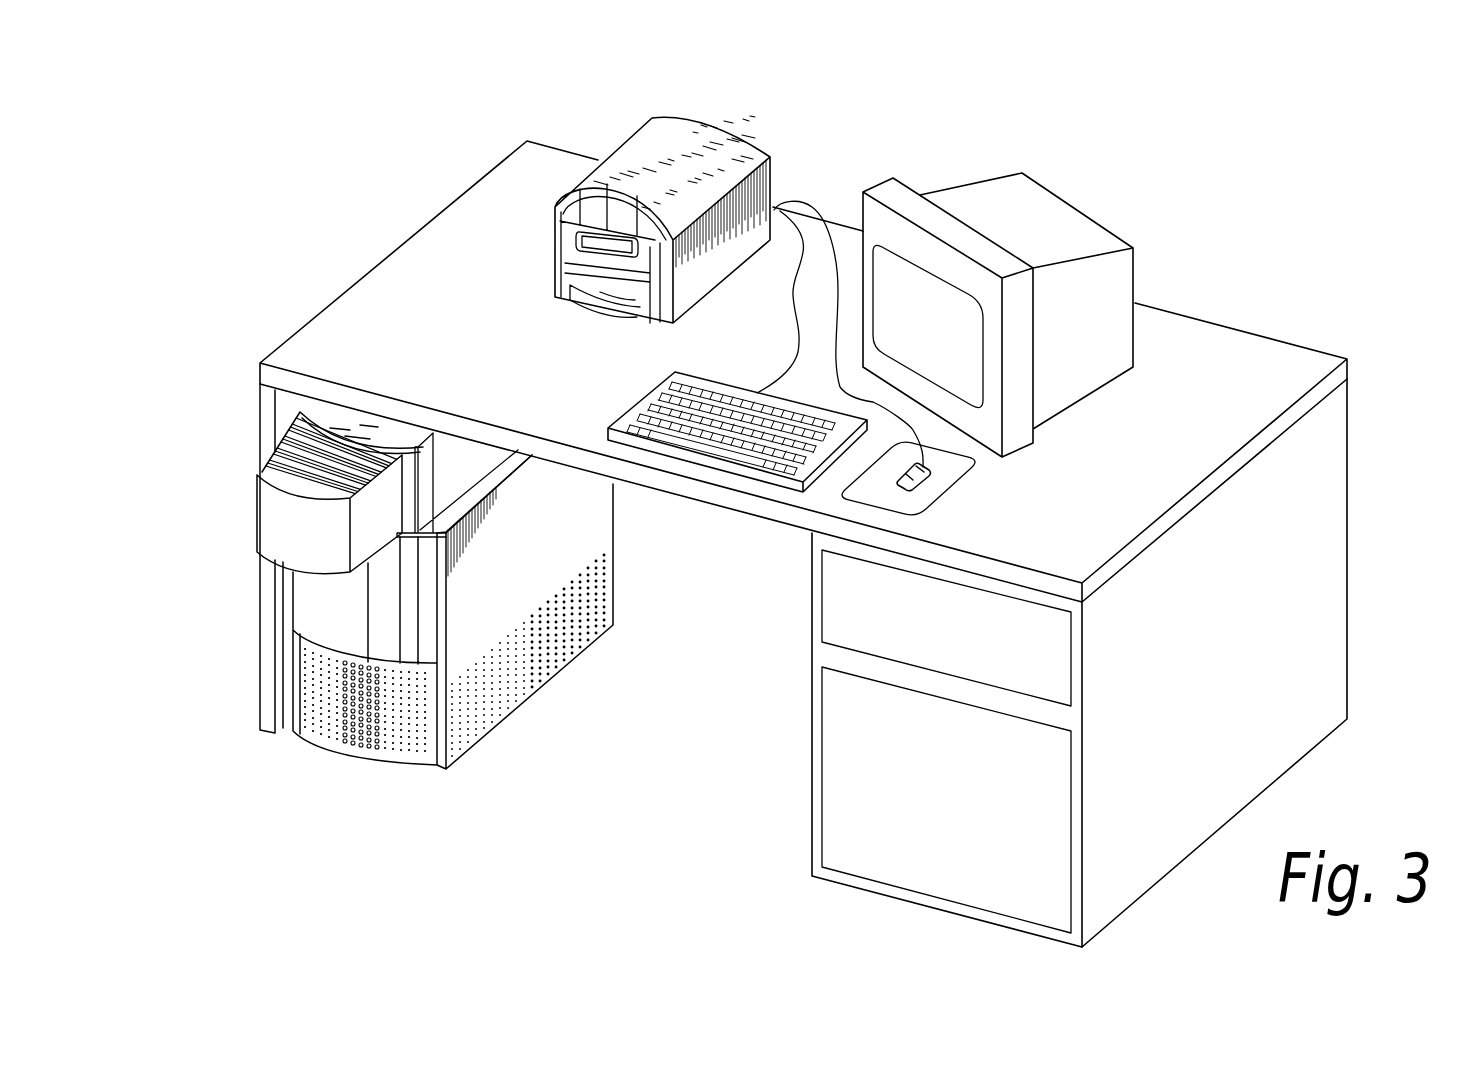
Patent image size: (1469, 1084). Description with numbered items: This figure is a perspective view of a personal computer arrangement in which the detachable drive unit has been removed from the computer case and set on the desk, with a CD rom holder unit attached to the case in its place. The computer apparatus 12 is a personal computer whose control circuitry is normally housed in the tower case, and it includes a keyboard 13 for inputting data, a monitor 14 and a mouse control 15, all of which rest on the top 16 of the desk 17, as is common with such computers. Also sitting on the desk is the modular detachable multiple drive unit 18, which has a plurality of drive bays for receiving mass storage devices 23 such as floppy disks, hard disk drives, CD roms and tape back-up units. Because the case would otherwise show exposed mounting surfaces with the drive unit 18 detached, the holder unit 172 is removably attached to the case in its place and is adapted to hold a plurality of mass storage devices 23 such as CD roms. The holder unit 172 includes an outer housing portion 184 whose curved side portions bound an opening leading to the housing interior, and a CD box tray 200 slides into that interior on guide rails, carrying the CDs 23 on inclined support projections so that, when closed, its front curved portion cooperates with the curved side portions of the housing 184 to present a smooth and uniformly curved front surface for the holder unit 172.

The computer apparatus 12 is at (368, 201).
The keyboard 13 is at (692, 455).
The monitor 14 is at (1123, 265).
The mouse control 15 is at (903, 477).
The top 16 is at (1325, 364).
The desk 17 is at (1320, 562).
The modular detachable multiple drive unit 18 is at (781, 124).
The mass storage devices 23 is at (270, 466).
The holder unit 172 is at (250, 420).
The outer housing portion 184 is at (278, 405).
The CD box tray 200 is at (250, 531).